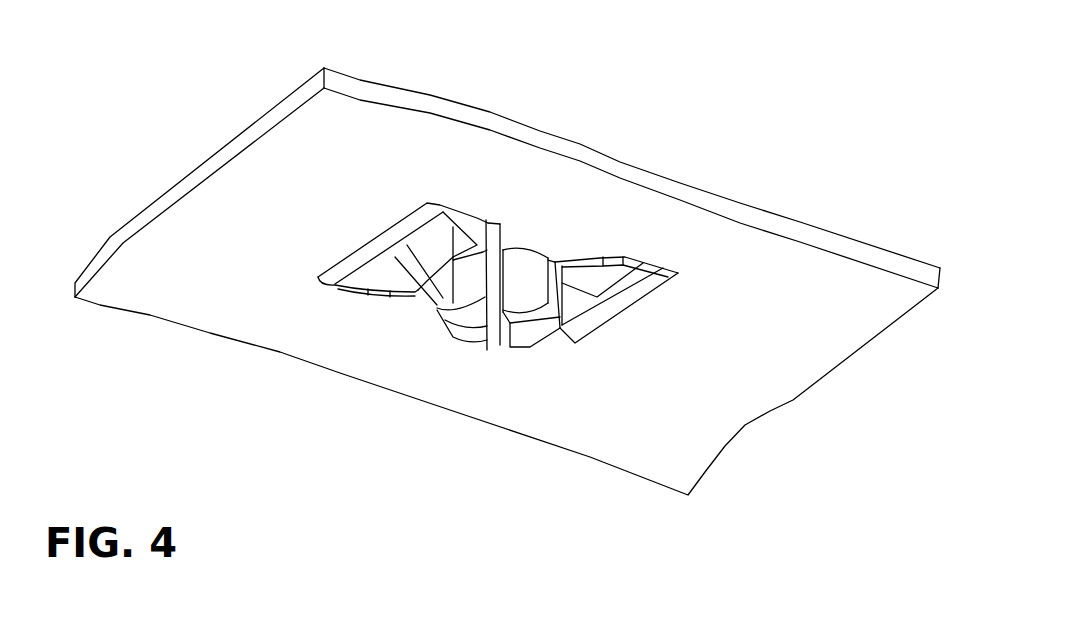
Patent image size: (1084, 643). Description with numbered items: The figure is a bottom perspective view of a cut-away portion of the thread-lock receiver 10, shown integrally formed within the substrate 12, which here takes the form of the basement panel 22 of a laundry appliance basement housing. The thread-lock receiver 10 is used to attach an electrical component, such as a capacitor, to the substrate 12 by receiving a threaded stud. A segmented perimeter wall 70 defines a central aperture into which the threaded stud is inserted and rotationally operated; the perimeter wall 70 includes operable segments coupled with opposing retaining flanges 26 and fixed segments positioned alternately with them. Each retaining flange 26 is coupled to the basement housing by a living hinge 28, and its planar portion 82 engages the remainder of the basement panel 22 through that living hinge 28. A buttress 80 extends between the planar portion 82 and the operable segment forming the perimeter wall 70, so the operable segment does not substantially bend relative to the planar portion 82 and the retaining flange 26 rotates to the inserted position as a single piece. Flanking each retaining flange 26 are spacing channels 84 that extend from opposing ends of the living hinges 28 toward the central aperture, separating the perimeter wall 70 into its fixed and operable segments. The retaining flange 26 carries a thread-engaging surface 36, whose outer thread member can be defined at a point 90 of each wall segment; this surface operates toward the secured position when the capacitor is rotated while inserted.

The thread-lock receiver 10 is at (552, 198).
The substrate 12 is at (798, 265).
The basement panel 22 is at (235, 183).
The retaining flange 26 is at (597, 275).
The living hinge 28 is at (610, 312).
The thread-engaging surface 36 is at (508, 352).
The perimeter wall 70 is at (522, 267).
The buttress 80 is at (428, 278).
The planar portion 82 is at (443, 238).
The spacing channel 84 is at (573, 258).
The point 90 is at (473, 348).